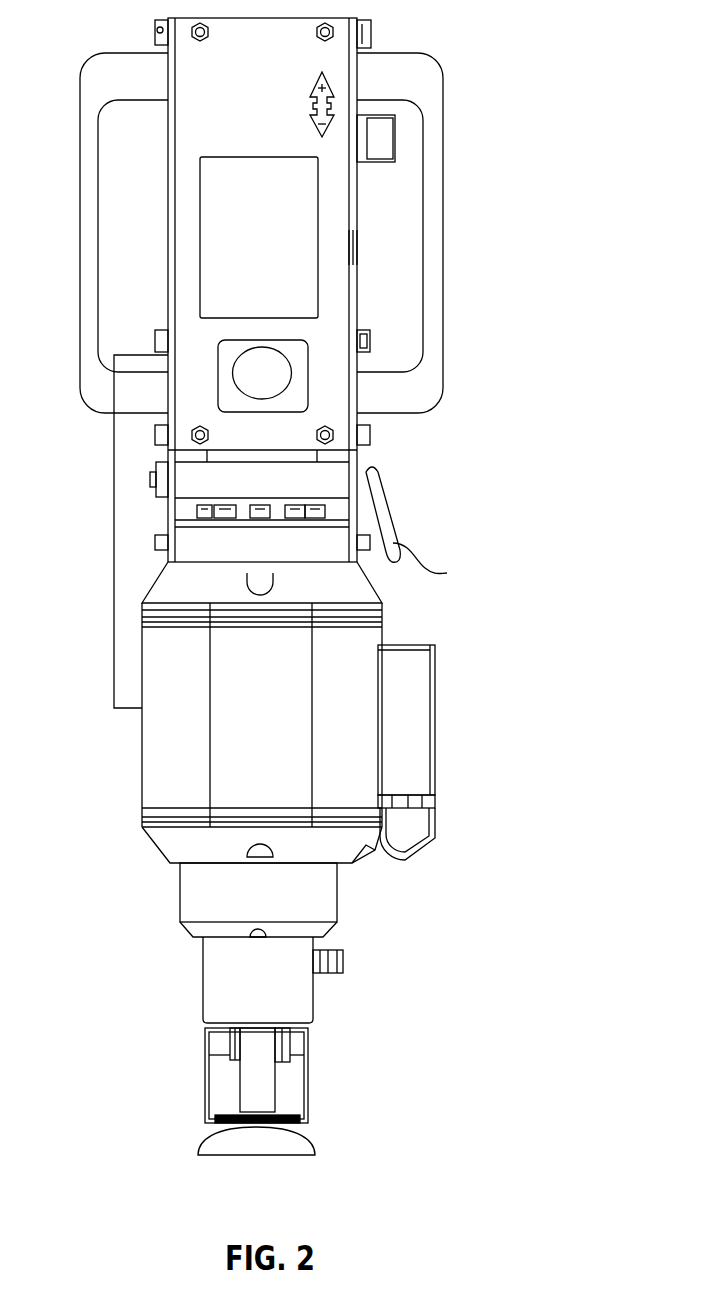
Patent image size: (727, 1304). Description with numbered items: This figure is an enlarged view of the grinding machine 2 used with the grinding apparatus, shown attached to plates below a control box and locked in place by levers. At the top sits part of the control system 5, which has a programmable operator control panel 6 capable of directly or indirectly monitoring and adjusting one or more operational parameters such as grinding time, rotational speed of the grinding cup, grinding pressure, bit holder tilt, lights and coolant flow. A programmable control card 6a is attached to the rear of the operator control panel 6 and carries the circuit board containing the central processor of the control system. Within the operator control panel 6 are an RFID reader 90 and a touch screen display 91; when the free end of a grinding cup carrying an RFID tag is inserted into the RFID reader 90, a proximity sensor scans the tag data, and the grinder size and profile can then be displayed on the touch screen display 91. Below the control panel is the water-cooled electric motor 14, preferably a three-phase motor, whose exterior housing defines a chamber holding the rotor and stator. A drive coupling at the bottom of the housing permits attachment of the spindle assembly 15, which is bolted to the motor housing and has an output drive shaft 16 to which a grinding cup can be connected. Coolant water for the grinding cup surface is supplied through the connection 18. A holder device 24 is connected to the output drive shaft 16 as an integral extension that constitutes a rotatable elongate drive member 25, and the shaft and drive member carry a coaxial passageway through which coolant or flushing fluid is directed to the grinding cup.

The grinding machine 2 is at (443, 740).
The control system 5 is at (160, 528).
The programmable operator control panel 6 is at (342, 298).
The programmable control card 6a is at (353, 248).
The water-cooled electric motor 14 is at (166, 748).
The spindle assembly 15 is at (323, 912).
The output drive shaft 16 is at (252, 1078).
The connection 18 is at (343, 966).
The holder device 24 is at (278, 1093).
The rotatable elongate drive member 25 is at (248, 1105).
The RFID reader 90 is at (282, 375).
The touch screen display 91 is at (302, 207).